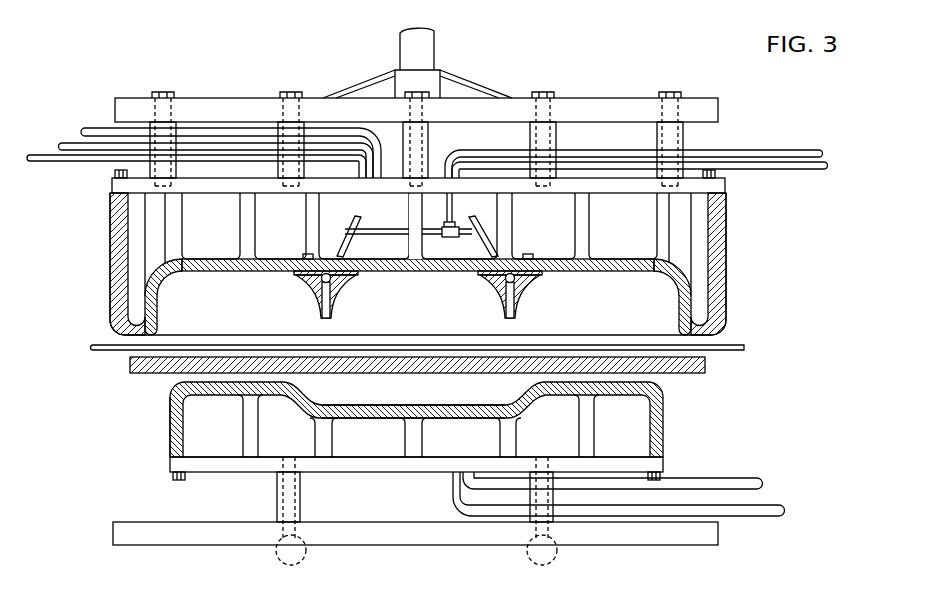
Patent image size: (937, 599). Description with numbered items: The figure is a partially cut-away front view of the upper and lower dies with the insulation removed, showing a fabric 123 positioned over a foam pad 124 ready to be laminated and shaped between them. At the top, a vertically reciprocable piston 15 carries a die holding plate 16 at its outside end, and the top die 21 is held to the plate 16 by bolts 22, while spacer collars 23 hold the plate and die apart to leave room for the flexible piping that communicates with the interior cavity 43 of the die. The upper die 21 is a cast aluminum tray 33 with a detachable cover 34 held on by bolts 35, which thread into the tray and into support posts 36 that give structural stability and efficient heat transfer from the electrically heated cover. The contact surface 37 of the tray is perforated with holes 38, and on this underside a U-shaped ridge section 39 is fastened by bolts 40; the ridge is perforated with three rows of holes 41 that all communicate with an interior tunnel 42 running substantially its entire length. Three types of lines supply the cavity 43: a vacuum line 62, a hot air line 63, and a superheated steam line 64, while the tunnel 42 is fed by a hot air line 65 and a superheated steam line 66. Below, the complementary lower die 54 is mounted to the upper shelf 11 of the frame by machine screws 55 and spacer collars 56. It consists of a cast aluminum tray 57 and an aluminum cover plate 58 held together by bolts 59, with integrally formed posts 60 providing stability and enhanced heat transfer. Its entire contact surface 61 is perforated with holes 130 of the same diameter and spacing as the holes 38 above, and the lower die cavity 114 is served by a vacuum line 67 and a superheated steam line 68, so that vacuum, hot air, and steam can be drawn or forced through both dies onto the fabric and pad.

The upper shelf 11 is at (684, 547).
The piston 15 is at (432, 49).
The die holding plate 16 is at (622, 106).
The top die 21 is at (735, 243).
The bolts 22 is at (164, 92).
The spacer collars 23 is at (556, 132).
The cast aluminum tray 33 is at (728, 272).
The detachable cover 34 is at (725, 191).
The bolts 35 is at (116, 174).
The support posts 36 is at (241, 224).
The contact surface 37 is at (405, 276).
The holes 38 is at (236, 274).
The U-shaped ridge section 39 is at (347, 285).
The bolts 40 is at (308, 254).
The holes 41 is at (320, 320).
The interior tunnel 42 is at (536, 281).
The interior cavity 43 is at (393, 221).
The lower die 54 is at (674, 418).
The machine screws 55 is at (300, 556).
The spacer collars 56 is at (300, 477).
The cast aluminum tray 57 is at (172, 400).
The aluminum cover plate 58 is at (231, 460).
The bolts 59 is at (178, 482).
The posts 60 is at (318, 442).
The contact surface 61 is at (384, 404).
The vacuum line 62 is at (103, 127).
The hot air line 63 is at (70, 143).
The superheated steam line 64 is at (46, 155).
The hot air line 65 is at (802, 150).
The superheated steam line 66 is at (812, 172).
The vacuum line 67 is at (764, 508).
The superheated steam line 68 is at (737, 488).
The lower die cavity 114 is at (384, 444).
The fabric 123 is at (742, 350).
The foam pad 124 is at (706, 368).
The holes 130 is at (536, 382).